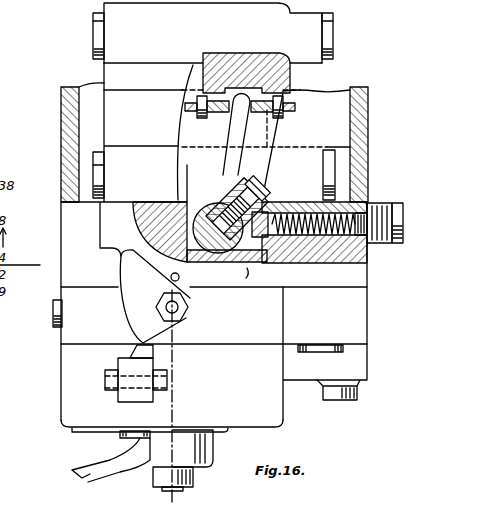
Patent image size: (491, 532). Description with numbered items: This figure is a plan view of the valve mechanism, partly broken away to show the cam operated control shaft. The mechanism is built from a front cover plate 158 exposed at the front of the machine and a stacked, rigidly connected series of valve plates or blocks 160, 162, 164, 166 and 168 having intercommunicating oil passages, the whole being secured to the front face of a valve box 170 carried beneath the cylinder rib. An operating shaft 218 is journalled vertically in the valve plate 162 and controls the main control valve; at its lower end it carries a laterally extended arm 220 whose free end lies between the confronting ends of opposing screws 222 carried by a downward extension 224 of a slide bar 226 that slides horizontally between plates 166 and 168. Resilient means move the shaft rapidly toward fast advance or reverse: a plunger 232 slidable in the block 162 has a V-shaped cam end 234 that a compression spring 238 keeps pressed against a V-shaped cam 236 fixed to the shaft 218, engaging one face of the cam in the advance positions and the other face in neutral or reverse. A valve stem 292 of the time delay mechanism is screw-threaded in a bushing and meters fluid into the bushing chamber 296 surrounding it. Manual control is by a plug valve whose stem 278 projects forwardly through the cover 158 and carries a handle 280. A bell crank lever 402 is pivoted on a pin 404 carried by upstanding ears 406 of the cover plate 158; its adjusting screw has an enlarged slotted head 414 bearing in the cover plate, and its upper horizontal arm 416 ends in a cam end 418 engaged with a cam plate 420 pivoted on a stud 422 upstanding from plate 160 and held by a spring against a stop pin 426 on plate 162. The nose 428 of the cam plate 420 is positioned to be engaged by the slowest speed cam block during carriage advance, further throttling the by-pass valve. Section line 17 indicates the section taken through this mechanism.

The valve plate 168 is at (118, 30).
The slide bar 226 is at (104, 72).
The valve box 170 is at (61, 98).
The valve plate 166 is at (108, 117).
The valve plate 164 is at (108, 167).
The bushing chamber 296 is at (78, 263).
The valve plate 162 is at (68, 275).
The nose 428 is at (108, 250).
The cam plate 420 is at (133, 308).
The valve plate 160 is at (70, 336).
The cam end 418 is at (165, 349).
The stud 422 is at (186, 304).
The stop pin 426 is at (179, 278).
The operating shaft 218 is at (235, 277).
The V-shaped cam 236 is at (250, 268).
The arm 220 is at (234, 148).
The V-shaped cam end 234 is at (274, 184).
The plunger 232 is at (259, 212).
The downward extension 224 is at (233, 125).
The screws 222 is at (195, 107).
The compression spring 238 is at (368, 178).
The section line 17- 17 is at (370, 287).
The valve stem 292 is at (322, 352).
The cover plate 158 is at (70, 392).
The pin 404 is at (168, 380).
The ears 406 is at (113, 385).
The upper horizontal arm 416 is at (122, 376).
The bell crank lever 402 is at (125, 388).
The enlarged head 414 is at (152, 440).
The handle 280 is at (86, 482).
The stem 278 is at (184, 491).